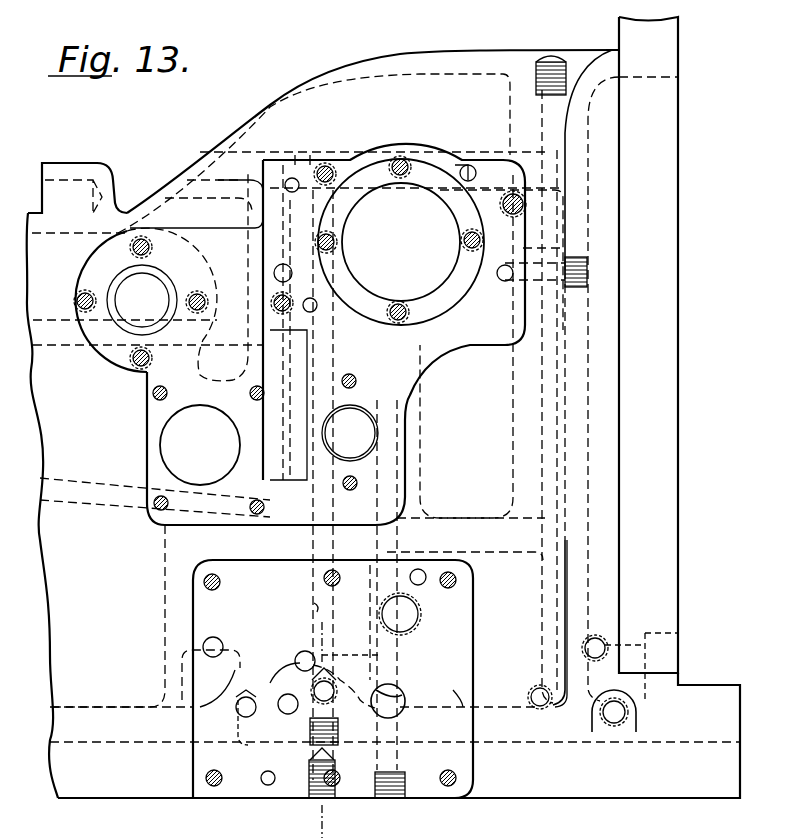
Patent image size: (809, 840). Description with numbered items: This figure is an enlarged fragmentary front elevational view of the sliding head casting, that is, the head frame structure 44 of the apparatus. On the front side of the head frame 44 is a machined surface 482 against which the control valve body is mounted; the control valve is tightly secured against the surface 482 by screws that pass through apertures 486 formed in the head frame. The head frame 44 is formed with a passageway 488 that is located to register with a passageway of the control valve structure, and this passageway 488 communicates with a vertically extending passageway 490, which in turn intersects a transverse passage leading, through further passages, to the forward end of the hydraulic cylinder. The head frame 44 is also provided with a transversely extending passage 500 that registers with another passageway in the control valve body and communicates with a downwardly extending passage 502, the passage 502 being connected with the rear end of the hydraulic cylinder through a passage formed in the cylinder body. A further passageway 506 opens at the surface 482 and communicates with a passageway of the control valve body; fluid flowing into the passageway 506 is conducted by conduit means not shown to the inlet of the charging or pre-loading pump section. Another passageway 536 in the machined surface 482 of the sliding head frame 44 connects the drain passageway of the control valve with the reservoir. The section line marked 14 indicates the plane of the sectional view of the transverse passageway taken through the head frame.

The head frame structure 44 is at (490, 58).
The machined surface 482 is at (462, 626).
The apertures 486 is at (205, 578).
The passageway 488 is at (305, 651).
The vertically extending passageway 490 is at (299, 599).
The transversely extending passage 500 is at (238, 709).
The downwardly extending passage 502 is at (240, 748).
The passageway 506 is at (205, 640).
The passageway 536 is at (396, 693).
The section line 14 is at (312, 822).